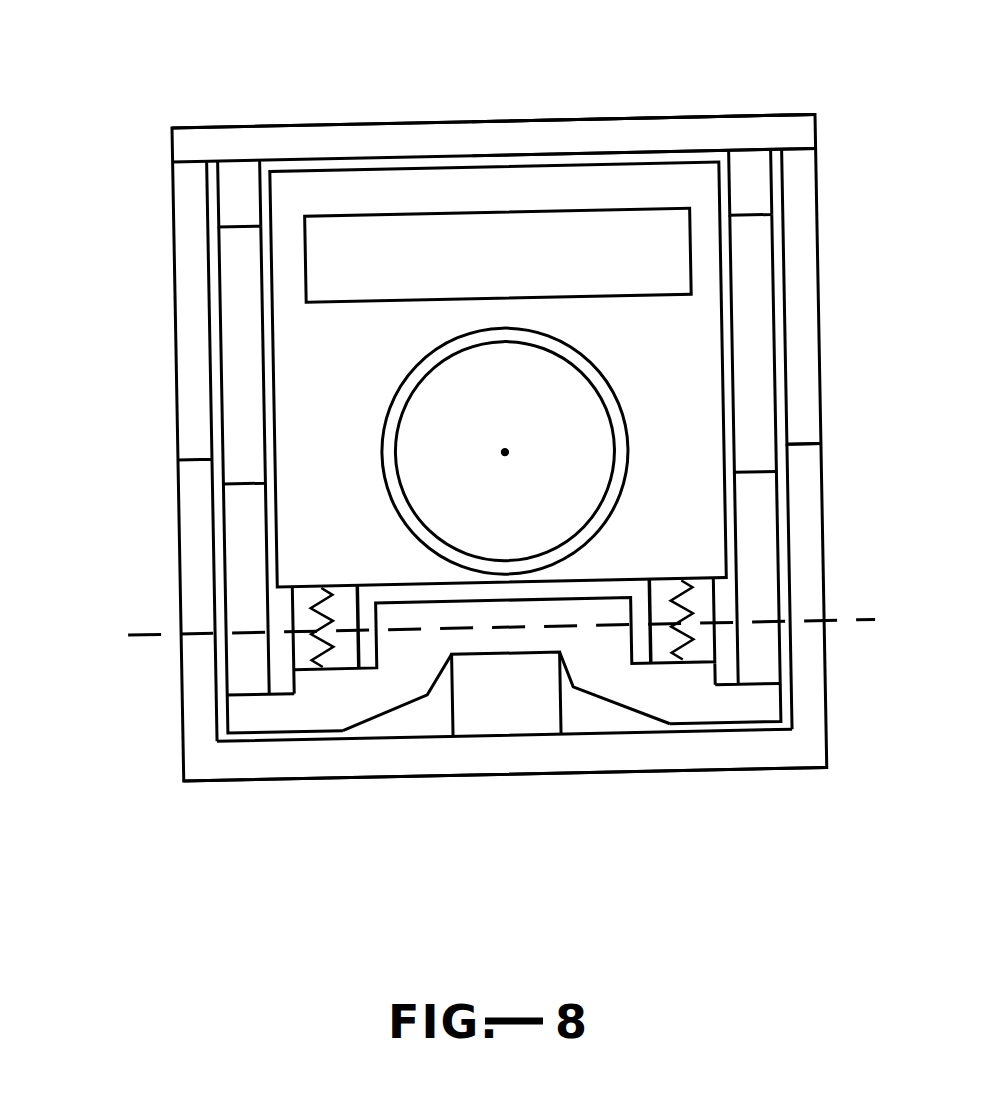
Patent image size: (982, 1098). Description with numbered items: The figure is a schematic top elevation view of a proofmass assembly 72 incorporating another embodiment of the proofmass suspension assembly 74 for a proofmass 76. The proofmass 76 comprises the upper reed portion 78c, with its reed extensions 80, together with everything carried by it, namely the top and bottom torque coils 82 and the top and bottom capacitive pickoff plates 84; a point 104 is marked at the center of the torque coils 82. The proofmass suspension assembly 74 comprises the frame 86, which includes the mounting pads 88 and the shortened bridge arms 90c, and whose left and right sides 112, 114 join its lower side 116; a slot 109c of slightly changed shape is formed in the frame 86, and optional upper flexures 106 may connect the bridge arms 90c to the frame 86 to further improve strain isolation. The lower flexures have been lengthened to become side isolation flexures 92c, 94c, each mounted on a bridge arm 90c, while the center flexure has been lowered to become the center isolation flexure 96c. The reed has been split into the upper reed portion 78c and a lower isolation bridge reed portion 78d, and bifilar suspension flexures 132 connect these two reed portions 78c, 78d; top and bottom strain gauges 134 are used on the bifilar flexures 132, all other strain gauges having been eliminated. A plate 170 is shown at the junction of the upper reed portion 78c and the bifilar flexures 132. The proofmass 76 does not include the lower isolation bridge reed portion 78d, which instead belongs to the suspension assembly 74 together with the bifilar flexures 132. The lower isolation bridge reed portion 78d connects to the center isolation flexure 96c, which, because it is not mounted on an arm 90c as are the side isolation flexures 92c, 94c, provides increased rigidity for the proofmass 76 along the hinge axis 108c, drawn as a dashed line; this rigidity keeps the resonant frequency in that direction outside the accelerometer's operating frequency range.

The proofmass assembly 72 is at (197, 52).
The proofmass suspension assembly 74 is at (157, 97).
The proofmass 76 is at (142, 135).
The frame 86 is at (682, 85).
The slot 109c is at (443, 165).
The upper flexures 106 is at (218, 205).
The mounting pads 88 is at (810, 310).
The bridge arms 90c is at (232, 325).
The side isolation flexure 92c is at (232, 550).
The side isolation flexure 94c is at (763, 560).
The left side of frame 112 is at (193, 710).
The right side of frame 114 is at (813, 602).
The lower side of frame 116 is at (603, 762).
The reed extensions 80 is at (250, 722).
The upper reed portion 78c is at (288, 372).
The capacitive pickoff plates 84 is at (637, 283).
The torque coils 82 is at (613, 495).
The center point 104 is at (508, 455).
The bracket plate 170 is at (601, 590).
The bifilar suspension flexures 132 is at (342, 663).
The strain gauges 134 is at (340, 596).
The hinge axis 108c is at (152, 612).
The center isolation flexure 96c is at (503, 723).
The lower isolation bridge reed portion 78d is at (385, 695).